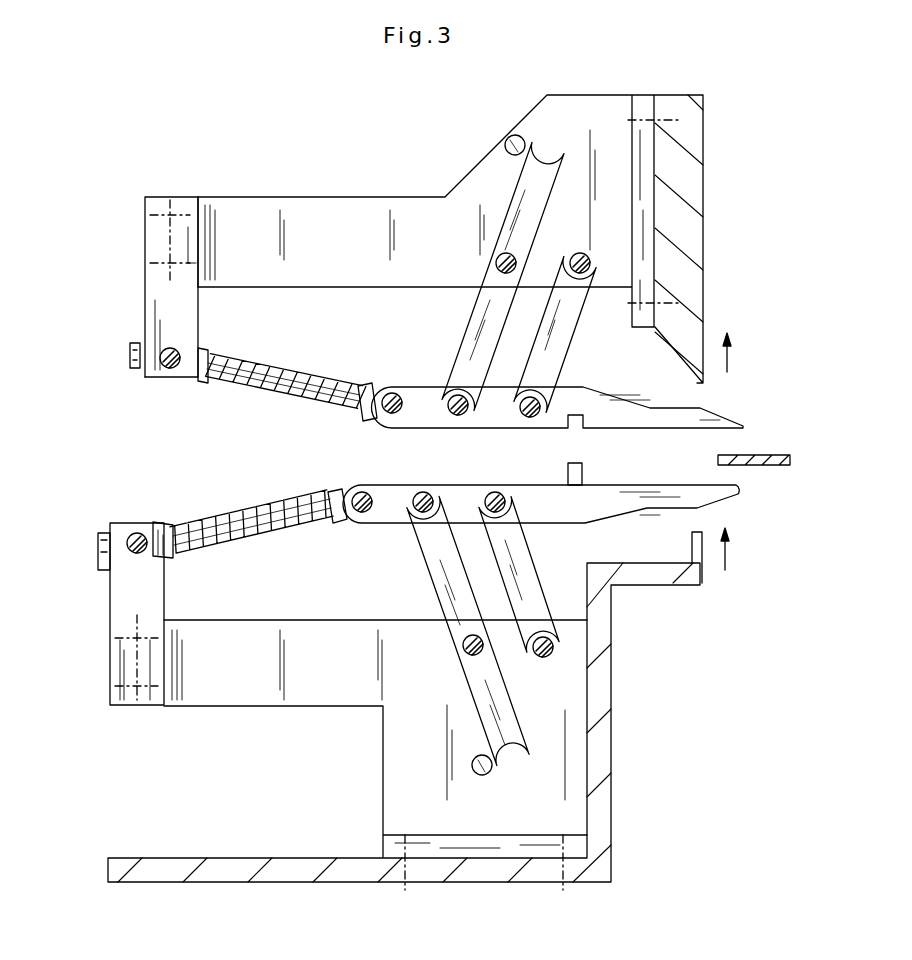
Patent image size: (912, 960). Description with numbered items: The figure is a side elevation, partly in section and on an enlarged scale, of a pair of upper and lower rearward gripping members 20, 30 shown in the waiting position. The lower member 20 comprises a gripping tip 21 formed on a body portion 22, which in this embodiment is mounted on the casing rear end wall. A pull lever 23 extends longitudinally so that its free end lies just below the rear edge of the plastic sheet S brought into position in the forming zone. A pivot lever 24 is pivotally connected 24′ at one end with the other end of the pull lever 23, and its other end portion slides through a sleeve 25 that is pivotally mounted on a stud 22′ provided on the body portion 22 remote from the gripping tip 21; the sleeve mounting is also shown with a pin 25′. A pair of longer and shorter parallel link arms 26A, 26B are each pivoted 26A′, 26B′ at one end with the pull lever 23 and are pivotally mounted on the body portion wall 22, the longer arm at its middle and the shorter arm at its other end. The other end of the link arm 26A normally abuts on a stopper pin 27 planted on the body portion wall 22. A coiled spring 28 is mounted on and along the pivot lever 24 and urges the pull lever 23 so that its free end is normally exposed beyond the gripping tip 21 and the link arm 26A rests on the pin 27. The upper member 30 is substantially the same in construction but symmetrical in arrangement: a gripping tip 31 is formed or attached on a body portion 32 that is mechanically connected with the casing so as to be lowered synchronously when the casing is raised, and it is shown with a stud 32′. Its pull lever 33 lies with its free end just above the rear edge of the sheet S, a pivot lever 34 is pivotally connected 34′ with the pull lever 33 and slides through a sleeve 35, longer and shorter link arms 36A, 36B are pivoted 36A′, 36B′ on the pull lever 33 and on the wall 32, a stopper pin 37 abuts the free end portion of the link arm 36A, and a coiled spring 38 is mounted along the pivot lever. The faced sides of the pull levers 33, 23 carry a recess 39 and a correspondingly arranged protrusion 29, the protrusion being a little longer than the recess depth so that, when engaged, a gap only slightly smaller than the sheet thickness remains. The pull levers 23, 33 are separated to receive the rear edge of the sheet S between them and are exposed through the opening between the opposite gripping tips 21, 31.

The lower rearward gripping member 20 is at (620, 684).
The gripping tip 21 is at (700, 552).
The body portion 22 is at (218, 860).
The stud 22′ is at (115, 598).
The pull lever 23 is at (717, 495).
The pivot lever 24 is at (237, 520).
The pivotal connection 24′ is at (362, 492).
The sleeve 25 is at (165, 523).
The anchor pin 25′ is at (137, 532).
The longer link arm 26A is at (424, 540).
The pivot of longer link arm 26A′ is at (430, 490).
The shorter link arm 26B is at (532, 543).
The pivot of shorter link arm 26B′ is at (500, 486).
The stopper pin 27 is at (481, 776).
The coiled spring 28 is at (295, 505).
The protrusion 29 is at (583, 471).
The upper rear gripping member 30 is at (713, 247).
The gripping tip 31 is at (739, 364).
The body portion 32 is at (252, 205).
The upright of upper frame 32′ is at (150, 232).
The pull lever 33 is at (664, 100).
The pivot lever 34 is at (305, 380).
The pivotal connection 34′ is at (393, 392).
The sleeve 35 is at (135, 368).
The longer link arm 36A is at (482, 308).
The pivot of longer link arm 36A′ is at (495, 262).
The shorter link arm 36B is at (570, 338).
The pivot of shorter link arm 36B′ is at (527, 422).
The stopper pin 37 is at (507, 141).
The coiled spring 38 is at (245, 364).
The recess 39 is at (590, 412).
The plastic sheet S is at (760, 468).